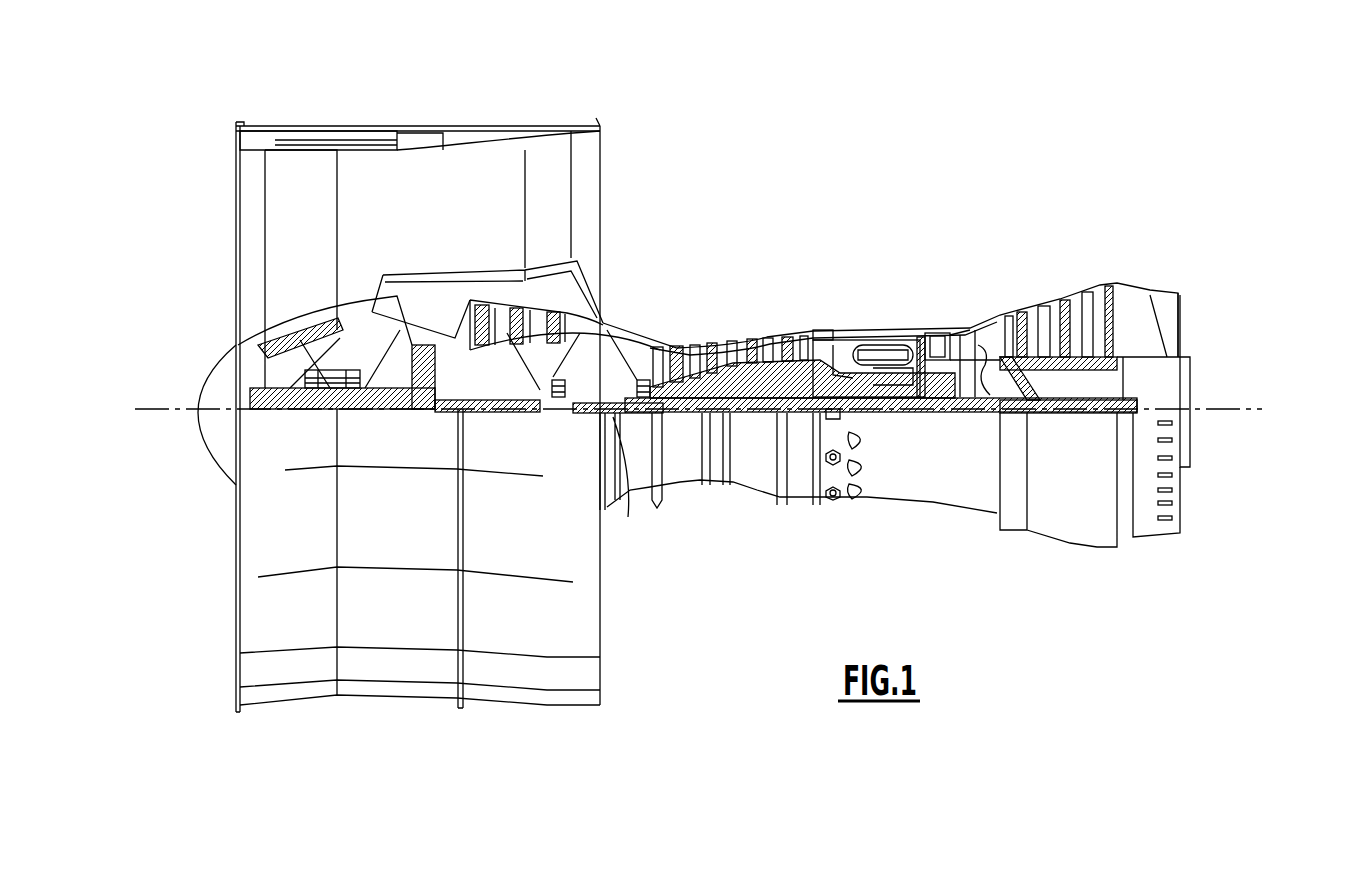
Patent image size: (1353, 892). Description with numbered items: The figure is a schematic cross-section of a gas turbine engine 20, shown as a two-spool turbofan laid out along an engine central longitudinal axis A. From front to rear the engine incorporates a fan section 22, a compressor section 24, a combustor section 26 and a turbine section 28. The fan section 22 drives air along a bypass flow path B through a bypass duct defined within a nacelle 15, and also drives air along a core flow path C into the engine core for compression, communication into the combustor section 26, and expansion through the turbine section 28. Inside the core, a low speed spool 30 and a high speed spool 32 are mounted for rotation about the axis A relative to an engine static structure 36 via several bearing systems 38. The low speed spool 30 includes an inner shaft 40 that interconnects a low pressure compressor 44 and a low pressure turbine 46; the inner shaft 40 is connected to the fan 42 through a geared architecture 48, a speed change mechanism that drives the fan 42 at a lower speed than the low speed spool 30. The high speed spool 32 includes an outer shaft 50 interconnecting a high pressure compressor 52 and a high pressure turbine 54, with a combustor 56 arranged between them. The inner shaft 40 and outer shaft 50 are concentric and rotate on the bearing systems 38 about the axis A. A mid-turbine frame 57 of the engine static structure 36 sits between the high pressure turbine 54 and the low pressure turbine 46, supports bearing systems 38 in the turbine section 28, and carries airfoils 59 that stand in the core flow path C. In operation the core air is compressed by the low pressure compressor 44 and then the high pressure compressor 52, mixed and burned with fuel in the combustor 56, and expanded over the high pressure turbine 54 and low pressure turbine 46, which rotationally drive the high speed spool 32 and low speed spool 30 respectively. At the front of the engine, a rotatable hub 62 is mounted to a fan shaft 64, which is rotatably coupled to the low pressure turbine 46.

The nacelle 15 is at (418, 130).
The gas turbine engine 20 is at (884, 172).
The fan section 22 is at (343, 113).
The compressor section 24 is at (645, 308).
The combustor section 26 is at (868, 296).
The turbine section 28 is at (1017, 258).
The low speed spool 30 is at (756, 423).
The high speed spool 32 is at (800, 345).
The engine static structure 36 is at (797, 515).
The bearing systems 38 is at (555, 400).
The inner shaft 40 is at (626, 440).
The fan 42 is at (318, 259).
The low pressure compressor 44 is at (540, 315).
The low pressure turbine 46 is at (1067, 305).
The geared architecture 48 is at (425, 395).
The outer shaft 50 is at (881, 413).
The high pressure compressor 52 is at (737, 356).
The high pressure turbine 54 is at (935, 350).
The combustor 56 is at (872, 355).
The mid-turbine frame 57 is at (982, 322).
The airfoils 59 is at (998, 358).
The rotatable hub 62 is at (282, 328).
The fan shaft 64 is at (236, 340).
The engine central longitudinal axis A is at (1262, 410).
The bypass flow path B is at (372, 202).
The core flow path C is at (418, 310).